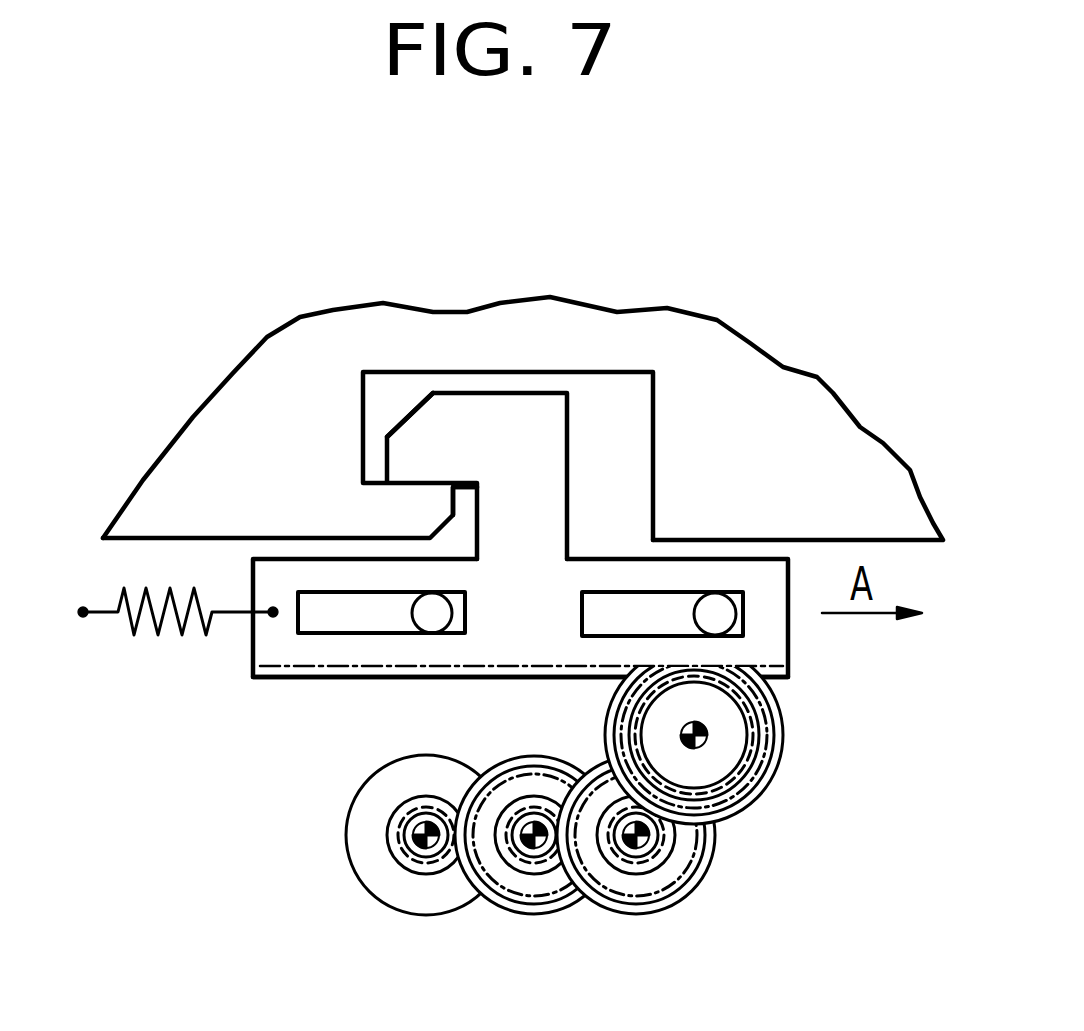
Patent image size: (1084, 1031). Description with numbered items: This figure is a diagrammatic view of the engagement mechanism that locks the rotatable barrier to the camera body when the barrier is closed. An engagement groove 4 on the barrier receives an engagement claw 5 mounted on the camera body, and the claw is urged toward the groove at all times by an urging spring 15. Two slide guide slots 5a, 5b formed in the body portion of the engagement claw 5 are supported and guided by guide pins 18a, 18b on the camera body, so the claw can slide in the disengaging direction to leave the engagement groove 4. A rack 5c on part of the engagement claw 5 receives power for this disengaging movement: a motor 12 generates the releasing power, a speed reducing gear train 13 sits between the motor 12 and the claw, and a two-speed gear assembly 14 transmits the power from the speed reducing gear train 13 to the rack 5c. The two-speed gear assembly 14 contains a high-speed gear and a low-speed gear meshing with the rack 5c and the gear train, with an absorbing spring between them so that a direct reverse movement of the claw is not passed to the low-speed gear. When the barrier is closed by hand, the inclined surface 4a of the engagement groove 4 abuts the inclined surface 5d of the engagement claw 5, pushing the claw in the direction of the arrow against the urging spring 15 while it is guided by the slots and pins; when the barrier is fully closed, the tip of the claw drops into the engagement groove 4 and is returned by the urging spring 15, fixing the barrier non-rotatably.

The engagement groove 4 is at (410, 512).
The inclined surface of the engagement groove 4a is at (455, 518).
The engagement claw 5 is at (460, 413).
The slide guide slot 5a is at (313, 635).
The slide guide slot 5b is at (672, 590).
The rack 5c is at (323, 680).
The inclined surface of the engagement claw 5d is at (407, 417).
The motor 12 is at (393, 873).
The speed reducing gear train 13 is at (827, 846).
The two-speed gear assembly 14 is at (736, 735).
The urging spring 15 is at (150, 637).
The guide pin 18a is at (432, 620).
The guide pin 18b is at (718, 615).